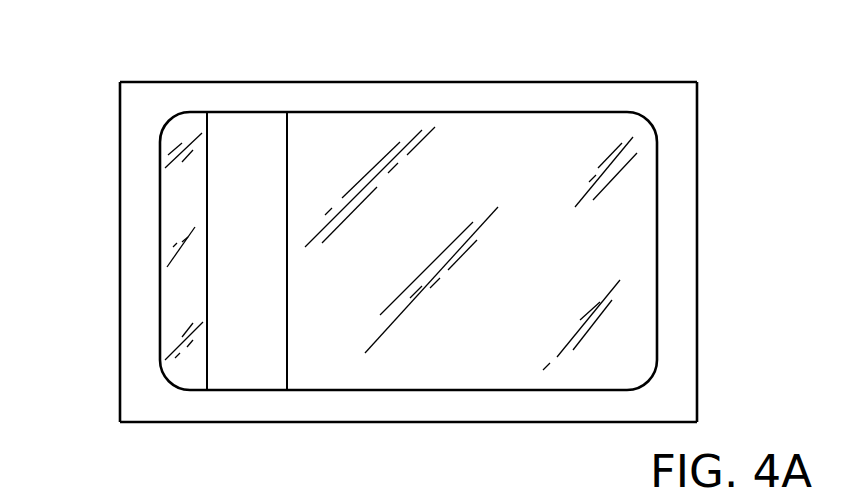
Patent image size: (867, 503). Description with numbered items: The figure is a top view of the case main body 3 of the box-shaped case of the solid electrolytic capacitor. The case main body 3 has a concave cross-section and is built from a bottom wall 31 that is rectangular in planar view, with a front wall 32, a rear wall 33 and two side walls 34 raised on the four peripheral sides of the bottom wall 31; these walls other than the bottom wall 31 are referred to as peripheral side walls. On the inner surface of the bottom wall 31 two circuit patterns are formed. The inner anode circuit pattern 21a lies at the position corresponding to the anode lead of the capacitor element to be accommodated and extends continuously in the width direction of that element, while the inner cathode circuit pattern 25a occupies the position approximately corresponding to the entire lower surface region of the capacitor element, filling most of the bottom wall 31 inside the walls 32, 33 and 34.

The case main body 3 is at (417, 255).
The inner anode circuit pattern 21a is at (180, 207).
The inner cathode circuit pattern 25a is at (537, 170).
The bottom wall 31 is at (246, 137).
The front wall 32 is at (138, 263).
The rear wall 33 is at (678, 282).
The side walls 34 is at (419, 98).